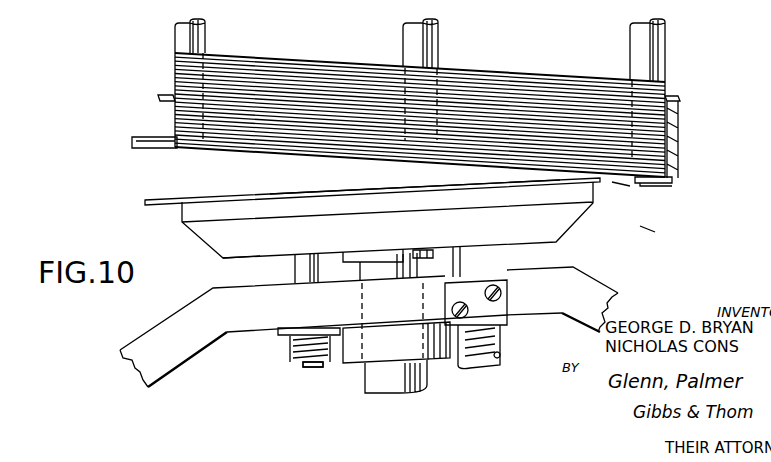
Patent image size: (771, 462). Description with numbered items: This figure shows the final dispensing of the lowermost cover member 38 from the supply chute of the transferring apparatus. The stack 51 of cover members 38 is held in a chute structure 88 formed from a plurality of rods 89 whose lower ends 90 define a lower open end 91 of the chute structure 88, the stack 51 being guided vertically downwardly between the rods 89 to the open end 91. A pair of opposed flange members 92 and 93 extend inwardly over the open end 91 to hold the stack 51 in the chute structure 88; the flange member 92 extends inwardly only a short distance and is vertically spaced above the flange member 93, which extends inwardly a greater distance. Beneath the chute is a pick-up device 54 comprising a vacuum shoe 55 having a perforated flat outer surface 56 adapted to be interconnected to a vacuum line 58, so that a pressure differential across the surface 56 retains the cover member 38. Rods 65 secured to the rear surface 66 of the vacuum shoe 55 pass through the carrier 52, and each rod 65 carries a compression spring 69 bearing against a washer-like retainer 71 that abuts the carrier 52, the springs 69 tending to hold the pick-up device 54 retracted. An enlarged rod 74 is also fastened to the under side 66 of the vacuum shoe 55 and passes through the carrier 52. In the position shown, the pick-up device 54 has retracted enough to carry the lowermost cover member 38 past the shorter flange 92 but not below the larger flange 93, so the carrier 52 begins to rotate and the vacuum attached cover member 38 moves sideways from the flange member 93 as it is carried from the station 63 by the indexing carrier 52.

The cover member 38 is at (166, 205).
The stack of cover members 51 is at (519, 68).
The carrier 52 is at (157, 342).
The pick-up device 54 is at (218, 259).
The vacuum shoe 55 is at (558, 219).
The flat outer surface 56 is at (282, 192).
The vacuum line 58 is at (502, 330).
The first station 63 is at (652, 231).
The rods 65 is at (303, 365).
The rear surface 66 is at (257, 261).
The compression spring 69 is at (335, 360).
The washer-like retainer 71 is at (290, 340).
The enlarged rod 74 is at (388, 383).
The chute structure 88 is at (686, 42).
The rods 89 is at (183, 38).
The lower ends 90 is at (180, 130).
The lower open end 91 is at (622, 190).
The flange member 92 is at (176, 149).
The flange member 93 is at (645, 183).